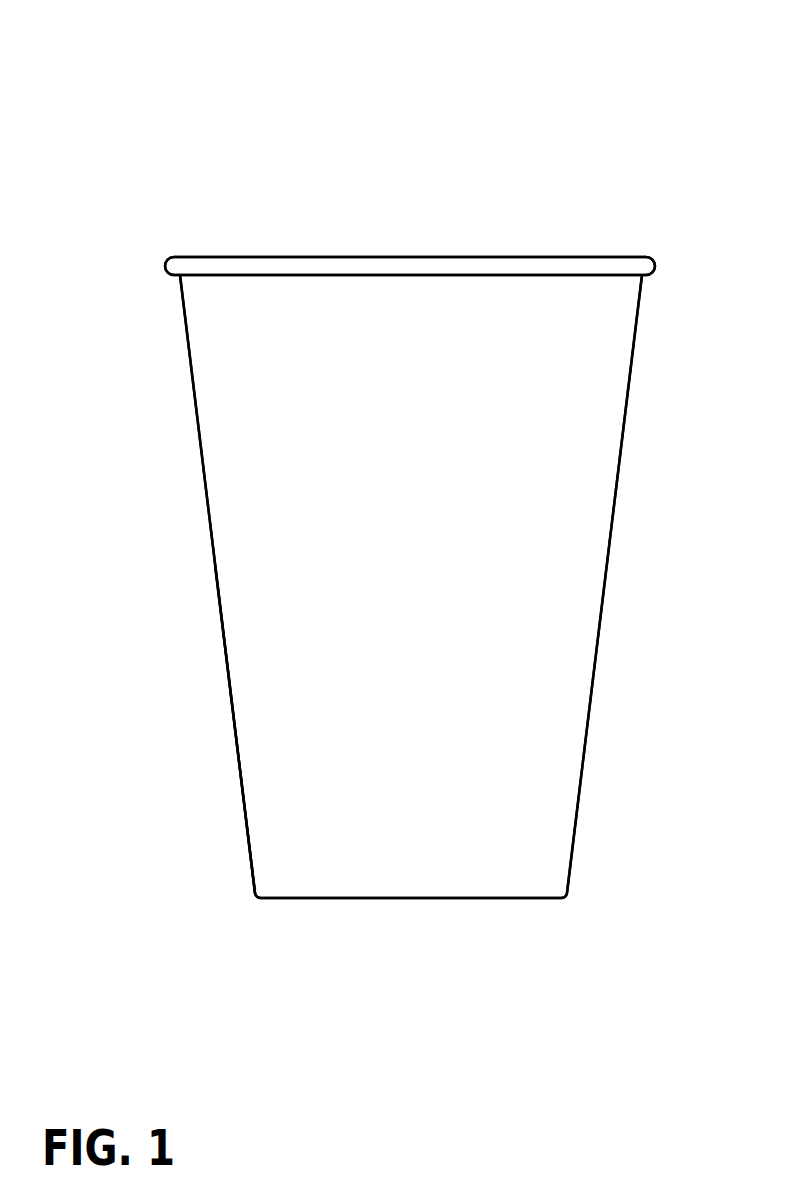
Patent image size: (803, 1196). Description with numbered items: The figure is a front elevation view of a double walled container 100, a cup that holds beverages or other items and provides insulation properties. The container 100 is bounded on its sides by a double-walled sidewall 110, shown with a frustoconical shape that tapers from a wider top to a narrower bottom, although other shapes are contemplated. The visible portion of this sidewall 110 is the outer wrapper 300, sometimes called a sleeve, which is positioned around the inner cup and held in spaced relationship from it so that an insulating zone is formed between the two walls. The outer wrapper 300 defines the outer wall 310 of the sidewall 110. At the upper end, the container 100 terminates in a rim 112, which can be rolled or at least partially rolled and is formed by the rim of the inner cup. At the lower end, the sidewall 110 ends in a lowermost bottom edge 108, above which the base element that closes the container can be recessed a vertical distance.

The double walled container 100 is at (637, 96).
The rim 112 is at (165, 263).
The double-walled sidewall 110 is at (620, 467).
The outer wrapper 300 is at (228, 683).
The outer wall 310 is at (236, 750).
The lowermost bottom edge 108 is at (255, 898).